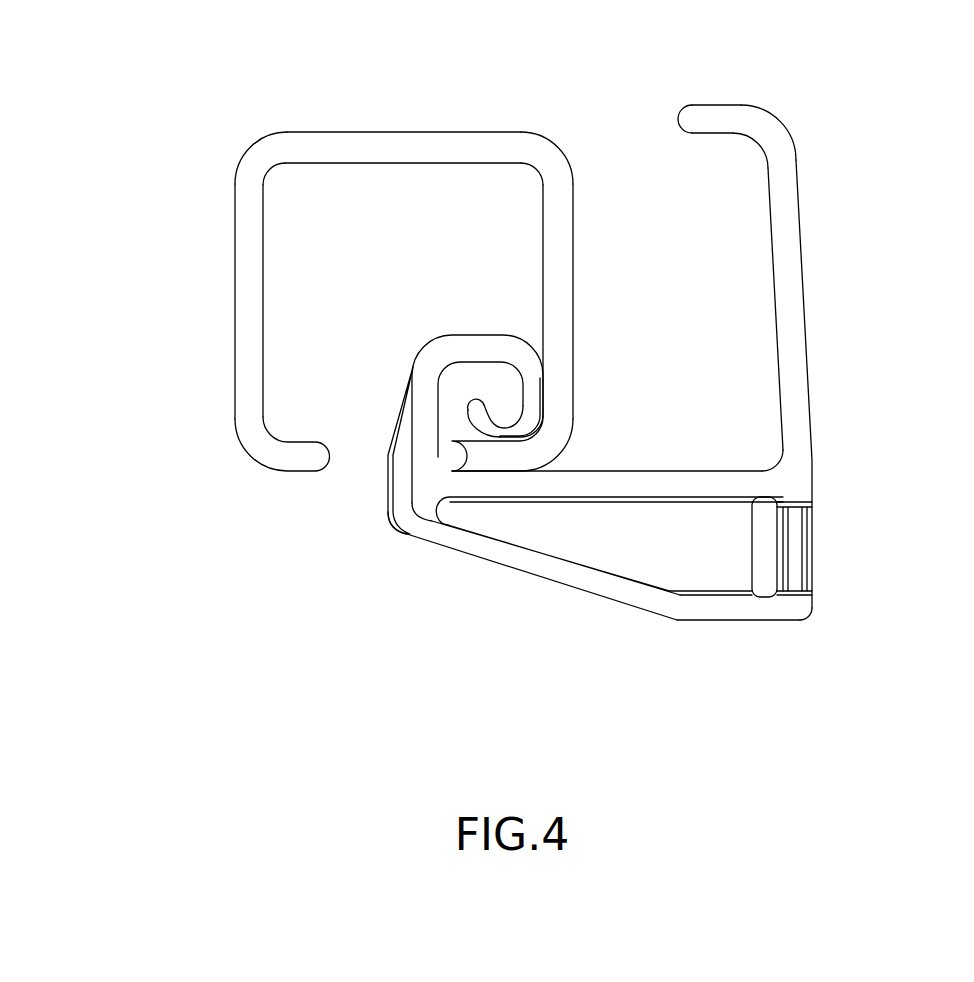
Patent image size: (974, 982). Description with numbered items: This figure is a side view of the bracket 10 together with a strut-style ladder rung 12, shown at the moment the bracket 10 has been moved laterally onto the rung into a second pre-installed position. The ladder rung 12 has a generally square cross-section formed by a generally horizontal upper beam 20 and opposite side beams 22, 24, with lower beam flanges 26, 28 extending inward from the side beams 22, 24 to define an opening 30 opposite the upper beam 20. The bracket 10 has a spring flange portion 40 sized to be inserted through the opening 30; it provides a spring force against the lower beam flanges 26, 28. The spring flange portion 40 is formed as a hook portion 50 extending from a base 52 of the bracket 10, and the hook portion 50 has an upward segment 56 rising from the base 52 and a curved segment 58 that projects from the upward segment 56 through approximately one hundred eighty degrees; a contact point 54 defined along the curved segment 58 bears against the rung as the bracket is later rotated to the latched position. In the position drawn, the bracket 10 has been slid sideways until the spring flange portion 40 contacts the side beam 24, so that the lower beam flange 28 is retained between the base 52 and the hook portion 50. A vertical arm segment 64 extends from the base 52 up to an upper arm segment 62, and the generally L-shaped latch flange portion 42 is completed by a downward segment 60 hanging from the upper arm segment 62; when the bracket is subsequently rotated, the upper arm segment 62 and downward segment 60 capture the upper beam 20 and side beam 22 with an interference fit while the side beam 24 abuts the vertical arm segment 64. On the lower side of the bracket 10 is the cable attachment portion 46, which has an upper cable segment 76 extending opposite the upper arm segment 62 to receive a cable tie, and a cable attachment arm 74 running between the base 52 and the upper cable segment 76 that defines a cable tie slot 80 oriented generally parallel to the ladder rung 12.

The bracket 10 is at (806, 327).
The strut-style ladder rung 12 is at (316, 133).
The upper beam 20 is at (406, 136).
The side beam 22 is at (232, 309).
The side beam 24 is at (578, 233).
The lower beam flange 26 is at (293, 473).
The lower beam flange 28 is at (510, 462).
The opening 30 is at (360, 455).
The spring flange portion 40 is at (513, 342).
The latch flange portion 42 is at (778, 124).
The cable attachment portion 46 is at (767, 560).
The hook portion 50 is at (487, 427).
The base 52 is at (440, 418).
The contact point 54 is at (545, 403).
The upward segment 56 is at (478, 350).
The curved segment 58 is at (527, 372).
The downward segment 60 is at (707, 117).
The upper arm segment 62 is at (791, 200).
The vertical arm segment 64 is at (727, 482).
The cable attachment arm 74 is at (568, 578).
The upper cable segment 76 is at (814, 527).
The cable tie slot 80 is at (702, 565).